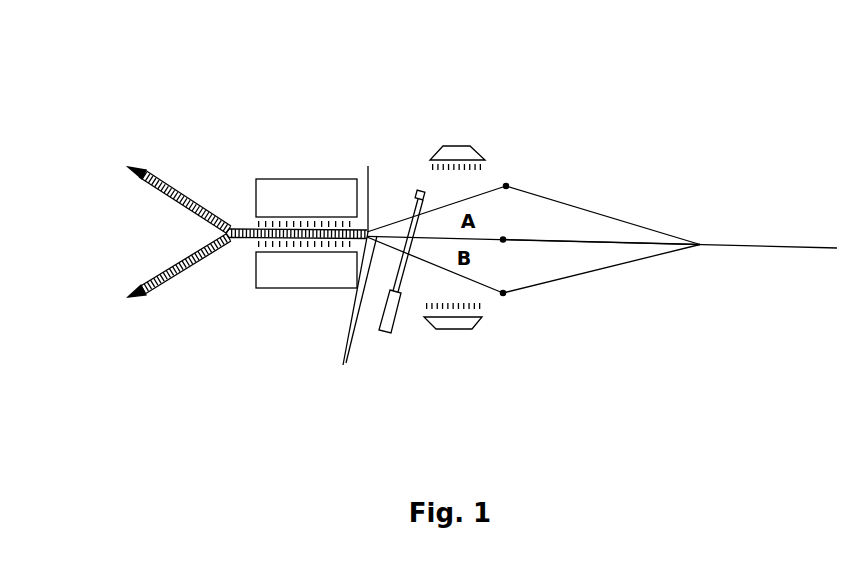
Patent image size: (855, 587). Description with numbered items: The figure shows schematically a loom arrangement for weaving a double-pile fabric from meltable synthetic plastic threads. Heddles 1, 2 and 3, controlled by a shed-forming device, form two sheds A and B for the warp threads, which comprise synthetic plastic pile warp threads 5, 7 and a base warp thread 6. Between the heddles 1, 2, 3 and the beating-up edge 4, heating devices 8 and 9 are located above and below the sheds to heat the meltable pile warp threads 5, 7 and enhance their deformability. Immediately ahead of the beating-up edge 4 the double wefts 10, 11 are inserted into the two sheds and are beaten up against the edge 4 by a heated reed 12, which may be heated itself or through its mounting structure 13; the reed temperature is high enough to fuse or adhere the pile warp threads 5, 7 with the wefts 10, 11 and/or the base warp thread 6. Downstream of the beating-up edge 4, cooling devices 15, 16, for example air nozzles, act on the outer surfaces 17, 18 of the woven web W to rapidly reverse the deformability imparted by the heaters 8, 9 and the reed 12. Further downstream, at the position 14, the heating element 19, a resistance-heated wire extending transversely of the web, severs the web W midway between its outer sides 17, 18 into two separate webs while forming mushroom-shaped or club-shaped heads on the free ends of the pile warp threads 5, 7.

The heddle 1 is at (506, 186).
The heddle 2 is at (538, 143).
The heddle 3 is at (503, 293).
The beating-up edge 4 is at (368, 166).
The synthetic plastic pile warp thread 5 is at (640, 226).
The base warp thread 6 is at (628, 243).
The synthetic plastic pile warp thread 7 is at (569, 277).
The heating device 8 is at (468, 146).
The heating device 9 is at (453, 329).
The double weft 10 is at (377, 235).
The double weft 11 is at (343, 365).
The heated reed 12 is at (420, 191).
The mounting structure 13 is at (388, 336).
The severing position 14 is at (231, 238).
The cooling device 15 is at (272, 179).
The cooling device 16 is at (270, 288).
The outer surface 17 is at (171, 193).
The outer surface 18 is at (169, 273).
The heating element 19 is at (228, 233).